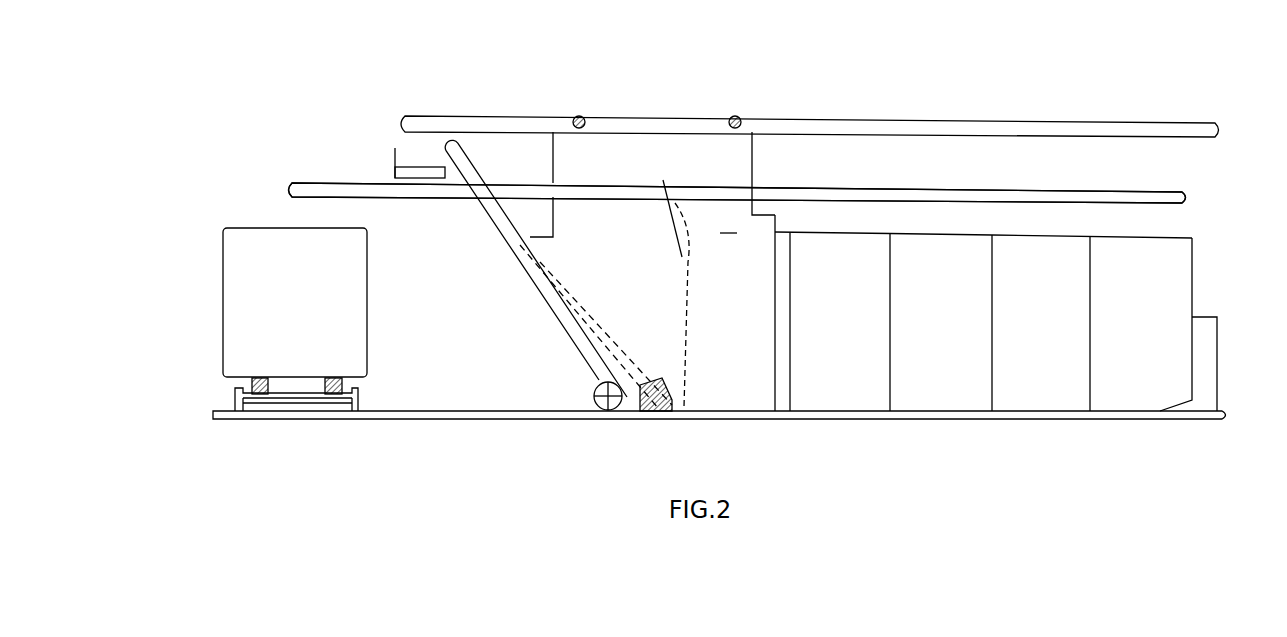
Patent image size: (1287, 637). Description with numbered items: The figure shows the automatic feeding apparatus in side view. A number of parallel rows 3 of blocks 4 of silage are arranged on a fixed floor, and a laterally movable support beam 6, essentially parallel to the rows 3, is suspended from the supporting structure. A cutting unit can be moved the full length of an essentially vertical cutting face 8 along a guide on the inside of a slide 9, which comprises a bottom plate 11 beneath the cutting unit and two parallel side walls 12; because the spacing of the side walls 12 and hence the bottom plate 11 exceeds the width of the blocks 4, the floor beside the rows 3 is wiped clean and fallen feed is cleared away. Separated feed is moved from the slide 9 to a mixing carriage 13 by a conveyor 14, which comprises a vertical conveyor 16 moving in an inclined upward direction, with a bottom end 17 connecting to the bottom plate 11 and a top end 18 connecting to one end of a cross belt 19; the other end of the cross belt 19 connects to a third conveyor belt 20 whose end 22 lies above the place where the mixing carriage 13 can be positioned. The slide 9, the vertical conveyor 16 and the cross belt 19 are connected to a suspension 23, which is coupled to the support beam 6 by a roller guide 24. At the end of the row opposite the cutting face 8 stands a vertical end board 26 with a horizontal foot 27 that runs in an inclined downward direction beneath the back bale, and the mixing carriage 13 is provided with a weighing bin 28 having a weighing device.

The rows 3 is at (1102, 303).
The blocks 4 is at (905, 305).
The support beam 6 is at (1052, 122).
The cutting face 8 is at (663, 180).
The slide 9 is at (779, 230).
The bottom plate 11 is at (667, 402).
The side walls 12 is at (737, 230).
The mixing carriage 13 is at (297, 357).
The conveyor 14 is at (507, 338).
The vertical conveyor 16 is at (496, 200).
The bottom end 17 is at (640, 407).
The top end 18 is at (451, 146).
The cross belt 19 is at (422, 172).
The third conveyor belt 20 is at (921, 187).
The end 22 is at (315, 189).
The suspension 23 is at (729, 187).
The roller guide 24 is at (579, 118).
The vertical end board 26 is at (1207, 333).
The foot 27 is at (1188, 411).
The weighing bin 28 is at (257, 262).